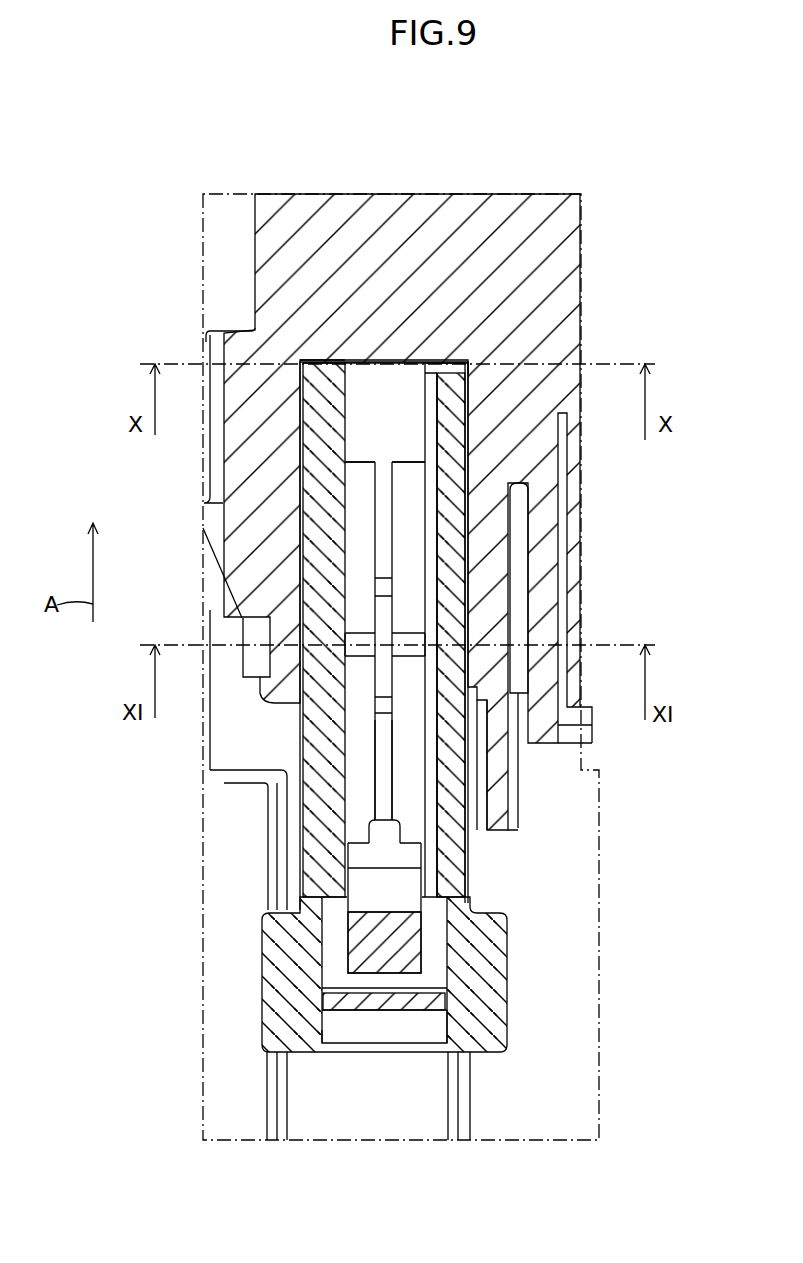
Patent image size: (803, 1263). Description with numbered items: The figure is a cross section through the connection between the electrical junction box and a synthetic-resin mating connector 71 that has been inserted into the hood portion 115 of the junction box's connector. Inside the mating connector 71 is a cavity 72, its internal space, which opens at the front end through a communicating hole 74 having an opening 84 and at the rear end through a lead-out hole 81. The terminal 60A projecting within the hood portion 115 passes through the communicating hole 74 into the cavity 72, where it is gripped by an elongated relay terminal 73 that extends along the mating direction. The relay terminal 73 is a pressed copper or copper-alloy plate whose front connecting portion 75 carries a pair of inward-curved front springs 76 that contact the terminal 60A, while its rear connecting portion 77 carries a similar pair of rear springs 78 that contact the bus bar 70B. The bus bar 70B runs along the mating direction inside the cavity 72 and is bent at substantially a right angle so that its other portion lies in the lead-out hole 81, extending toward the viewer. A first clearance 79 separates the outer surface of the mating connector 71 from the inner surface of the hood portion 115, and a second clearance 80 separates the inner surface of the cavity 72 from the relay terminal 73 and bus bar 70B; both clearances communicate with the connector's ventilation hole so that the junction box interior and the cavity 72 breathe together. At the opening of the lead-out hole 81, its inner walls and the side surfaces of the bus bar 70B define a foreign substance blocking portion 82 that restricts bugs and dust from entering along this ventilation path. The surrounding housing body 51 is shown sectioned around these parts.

The housing body 51 is at (303, 212).
The opening 84 is at (350, 372).
The hood portion 115 is at (385, 372).
The terminal 60A is at (440, 361).
The communicating hole 74 is at (345, 403).
The front springs 76 is at (410, 505).
The first clearance 79 is at (455, 405).
The front connecting portion 75 is at (410, 540).
The relay terminal 73 is at (400, 637).
The rear springs 78 is at (410, 775).
The rear connecting portion 77 is at (408, 738).
The second clearance 80 is at (470, 835).
The cavity 72 is at (425, 861).
The mating connector 71 is at (500, 945).
The foreign substance blocking portion 82 is at (345, 1000).
The bus bar 70B is at (390, 1000).
The lead-out hole 81 is at (437, 1035).